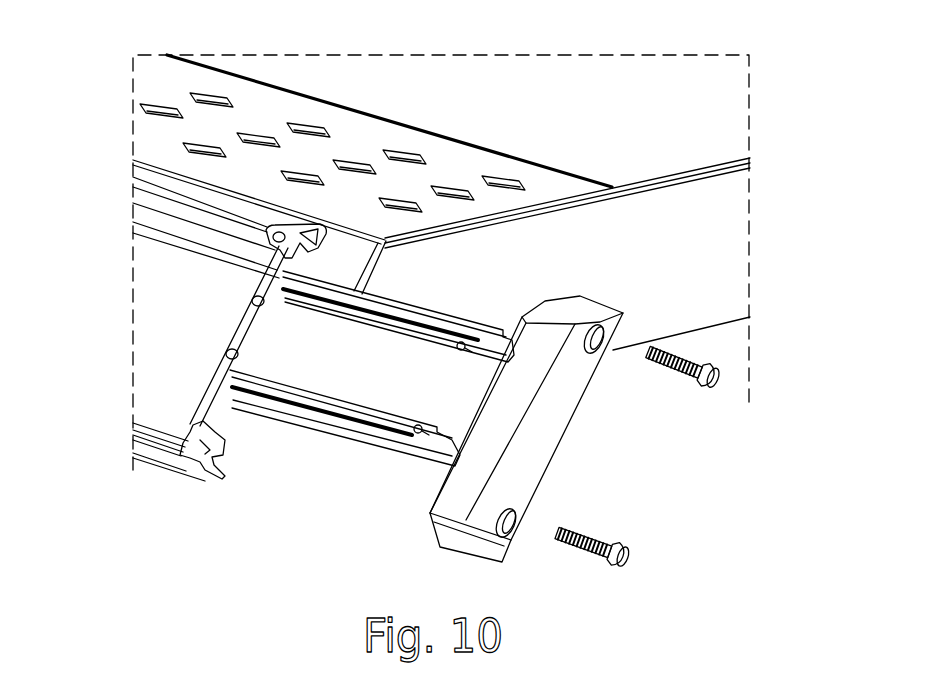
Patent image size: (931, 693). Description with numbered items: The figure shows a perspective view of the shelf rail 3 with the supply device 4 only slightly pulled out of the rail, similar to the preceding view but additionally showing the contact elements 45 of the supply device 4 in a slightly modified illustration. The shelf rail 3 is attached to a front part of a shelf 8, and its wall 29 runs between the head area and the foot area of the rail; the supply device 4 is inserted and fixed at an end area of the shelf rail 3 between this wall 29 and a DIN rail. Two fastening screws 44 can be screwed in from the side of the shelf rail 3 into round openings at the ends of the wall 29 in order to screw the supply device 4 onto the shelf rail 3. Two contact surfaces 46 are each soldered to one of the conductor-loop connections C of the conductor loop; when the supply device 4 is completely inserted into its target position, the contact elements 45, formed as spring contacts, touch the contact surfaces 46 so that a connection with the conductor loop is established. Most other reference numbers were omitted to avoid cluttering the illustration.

The shelf rail 3 is at (147, 297).
The wall 29 is at (147, 360).
The shelf 8 is at (732, 252).
The conductor-loop connections C is at (253, 298).
The contact surfaces 46 is at (266, 281).
The contact elements 45 is at (461, 344).
The supply device 4 is at (557, 417).
The fastening screws 44 is at (724, 378).